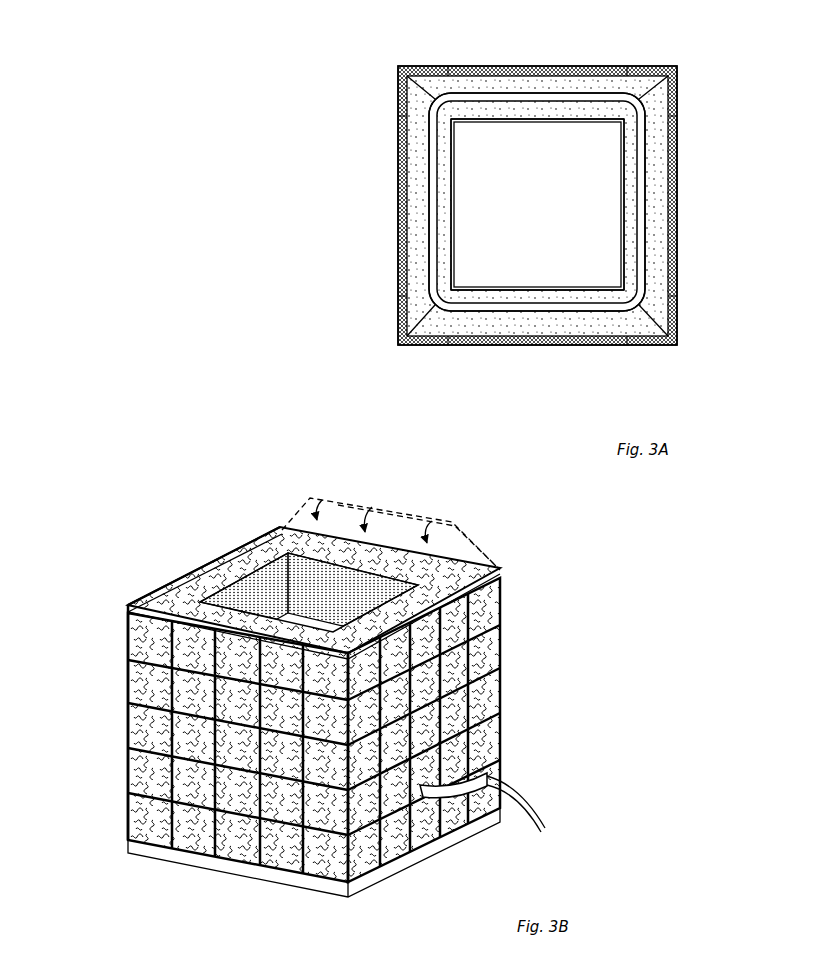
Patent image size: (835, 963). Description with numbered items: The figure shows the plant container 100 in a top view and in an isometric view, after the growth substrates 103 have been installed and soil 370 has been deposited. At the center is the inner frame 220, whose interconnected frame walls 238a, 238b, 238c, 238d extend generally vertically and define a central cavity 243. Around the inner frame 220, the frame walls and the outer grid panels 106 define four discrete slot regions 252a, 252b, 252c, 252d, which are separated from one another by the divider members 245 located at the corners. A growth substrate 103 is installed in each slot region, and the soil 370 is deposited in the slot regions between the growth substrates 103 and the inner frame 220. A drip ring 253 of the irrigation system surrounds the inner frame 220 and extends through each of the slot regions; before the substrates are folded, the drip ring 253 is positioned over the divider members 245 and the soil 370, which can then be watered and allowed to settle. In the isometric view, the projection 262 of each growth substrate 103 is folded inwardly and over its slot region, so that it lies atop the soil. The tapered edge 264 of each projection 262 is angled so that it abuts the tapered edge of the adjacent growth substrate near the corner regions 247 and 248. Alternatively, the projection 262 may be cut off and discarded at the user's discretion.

In FIG. 3A, the plant container 100 is at (390, 70).
In FIG. 3B, the plant container 100 is at (508, 562).
In FIG. 3A, the growth substrate 103 is at (612, 65).
In FIG. 3B, the growth substrate 103 is at (130, 720).
In FIG. 3A, the grid panel 106 is at (533, 65).
In FIG. 3A, the inner frame 220 is at (455, 141).
In FIG. 3A, the first frame wall 238a is at (628, 213).
In FIG. 3A, the second frame wall 238b is at (475, 290).
In FIG. 3A, the third frame wall 238c is at (453, 187).
In FIG. 3A, the fourth frame wall 238d is at (597, 118).
In FIG. 3A, the central cavity 243 is at (467, 220).
In FIG. 3A, the divider member 245 is at (433, 100).
In FIG. 3B, the corner region 247 is at (118, 612).
In FIG. 3B, the corner region 248 is at (190, 587).
In FIG. 3A, the first slot region 252a is at (655, 205).
In FIG. 3A, the second slot region 252b is at (537, 202).
In FIG. 3A, the third slot region 252c is at (420, 233).
In FIG. 3A, the fourth slot region 252d is at (468, 82).
In FIG. 3A, the drip ring 253 is at (432, 257).
In FIG. 3B, the projection 262 is at (243, 557).
In FIG. 3B, the tapered edge 264 is at (282, 527).
In FIG. 3A, the soil 370 is at (422, 167).